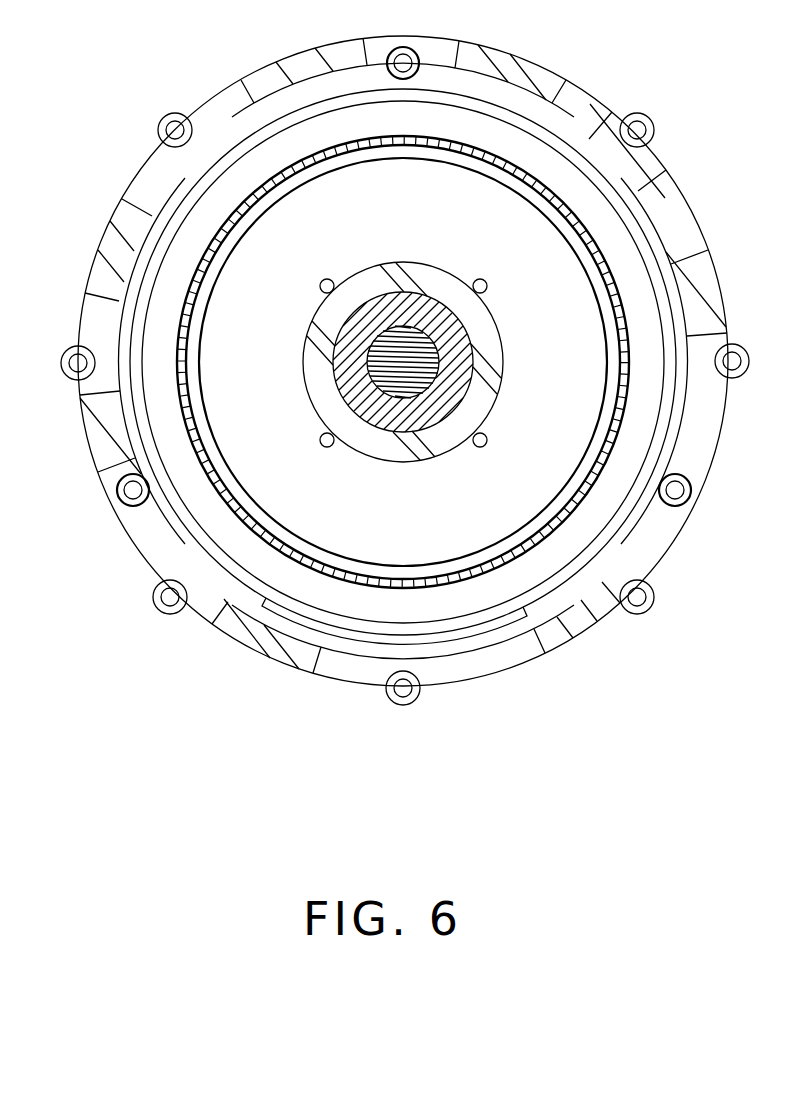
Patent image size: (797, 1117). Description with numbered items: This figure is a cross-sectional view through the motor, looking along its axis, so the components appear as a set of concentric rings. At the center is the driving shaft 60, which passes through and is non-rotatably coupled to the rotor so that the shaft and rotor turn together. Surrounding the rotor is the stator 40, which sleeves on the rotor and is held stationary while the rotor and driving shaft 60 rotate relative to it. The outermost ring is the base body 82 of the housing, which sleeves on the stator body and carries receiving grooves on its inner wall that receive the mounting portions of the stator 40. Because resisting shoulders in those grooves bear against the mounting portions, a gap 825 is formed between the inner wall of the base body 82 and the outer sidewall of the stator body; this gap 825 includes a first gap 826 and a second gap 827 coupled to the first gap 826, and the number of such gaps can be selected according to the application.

The base body 82 is at (540, 80).
The second gap 827 is at (313, 63).
The gap 825 is at (642, 540).
The first gap 826 is at (540, 618).
The stator 40 is at (640, 218).
The driving shaft 60 is at (375, 350).